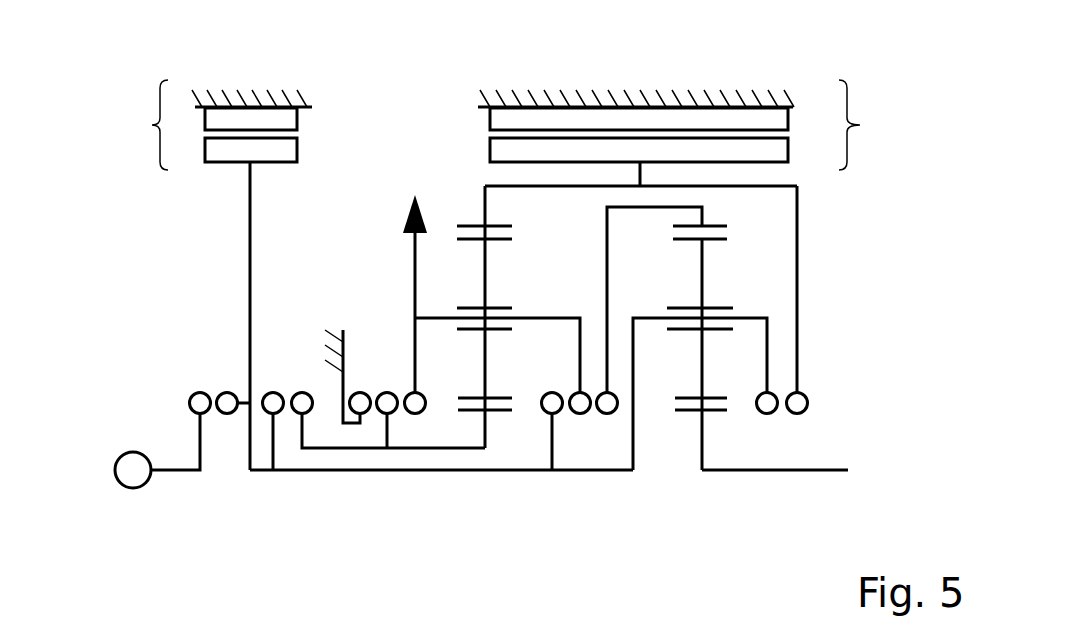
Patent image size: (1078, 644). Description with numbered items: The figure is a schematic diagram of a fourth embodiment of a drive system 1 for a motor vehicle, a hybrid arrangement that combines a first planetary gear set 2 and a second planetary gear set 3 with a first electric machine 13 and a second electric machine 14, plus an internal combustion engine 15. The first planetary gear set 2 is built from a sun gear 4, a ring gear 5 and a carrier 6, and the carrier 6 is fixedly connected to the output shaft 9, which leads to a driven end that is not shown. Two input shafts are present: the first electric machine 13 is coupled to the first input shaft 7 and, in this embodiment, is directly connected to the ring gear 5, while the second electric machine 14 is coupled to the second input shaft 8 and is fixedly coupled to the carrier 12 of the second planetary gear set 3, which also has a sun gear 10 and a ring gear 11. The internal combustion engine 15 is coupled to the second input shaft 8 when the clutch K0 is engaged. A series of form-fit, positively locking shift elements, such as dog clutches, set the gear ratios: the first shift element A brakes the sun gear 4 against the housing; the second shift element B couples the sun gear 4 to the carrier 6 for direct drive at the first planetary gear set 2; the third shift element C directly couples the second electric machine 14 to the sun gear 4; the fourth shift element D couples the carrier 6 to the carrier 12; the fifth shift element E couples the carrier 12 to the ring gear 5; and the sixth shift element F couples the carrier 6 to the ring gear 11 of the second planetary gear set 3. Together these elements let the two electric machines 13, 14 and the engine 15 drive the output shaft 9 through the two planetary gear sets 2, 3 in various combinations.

The drive system 1 is at (111, 515).
The first planetary gear set 2 is at (484, 480).
The second planetary gear set 3 is at (700, 482).
The sun gear 4 is at (447, 450).
The ring gear 5 is at (485, 205).
The carrier 6 is at (437, 313).
The first input shaft 7 is at (642, 182).
The second input shaft 8 is at (250, 263).
The output shaft 9 is at (413, 272).
The sun gear 10 is at (702, 443).
The ring gear 11 is at (655, 207).
The carrier 12 is at (748, 315).
The first electric machine 13 is at (860, 125).
The second electric machine 14 is at (152, 125).
The internal combustion engine 15 is at (122, 455).
The clutch K0 is at (214, 421).
The first form-fit shift element A is at (372, 420).
The second form-fit shift element B is at (399, 420).
The third form-fit shift element C is at (286, 381).
The fourth form-fit shift element D is at (564, 420).
The fifth form-fit shift element E is at (783, 420).
The sixth form-fit shift element F is at (595, 420).